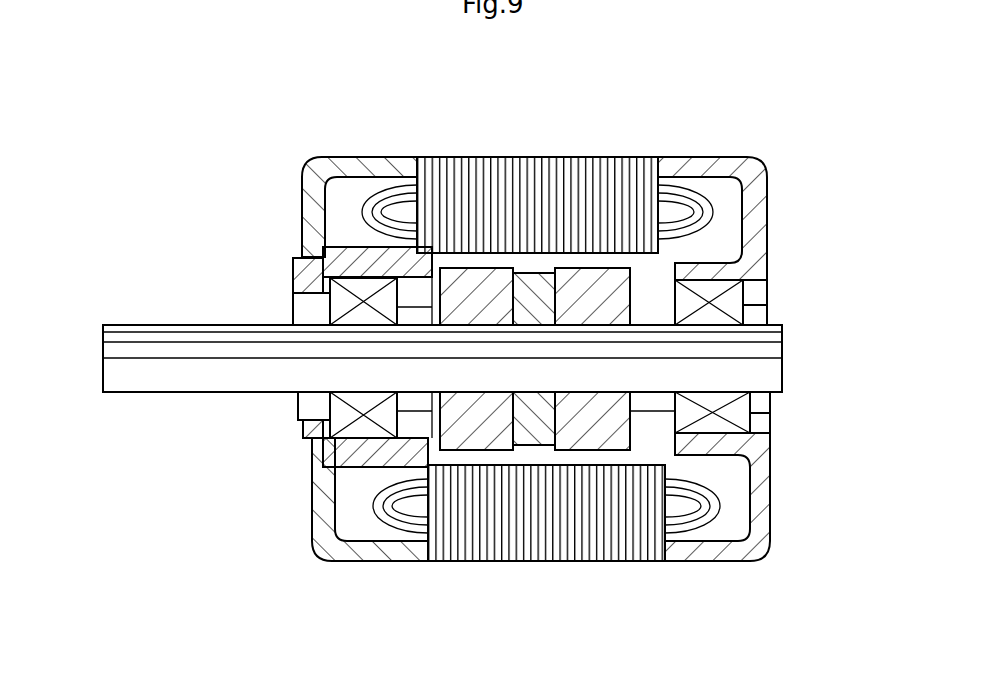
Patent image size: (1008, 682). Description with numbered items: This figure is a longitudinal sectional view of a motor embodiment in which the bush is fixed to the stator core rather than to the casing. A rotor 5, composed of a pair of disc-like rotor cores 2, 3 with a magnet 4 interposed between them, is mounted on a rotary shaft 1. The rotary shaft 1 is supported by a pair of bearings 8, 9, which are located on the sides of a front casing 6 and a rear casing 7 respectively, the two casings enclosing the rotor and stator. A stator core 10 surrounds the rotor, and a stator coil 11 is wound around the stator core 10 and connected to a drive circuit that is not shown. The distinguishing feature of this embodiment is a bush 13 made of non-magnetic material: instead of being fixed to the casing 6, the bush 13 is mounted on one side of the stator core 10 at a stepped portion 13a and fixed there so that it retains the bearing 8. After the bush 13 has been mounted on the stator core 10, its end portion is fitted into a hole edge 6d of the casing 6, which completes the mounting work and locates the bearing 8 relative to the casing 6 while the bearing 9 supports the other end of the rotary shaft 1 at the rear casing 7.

The rotary shaft 1 is at (130, 347).
The rotor core 2 is at (498, 432).
The rotor core 3 is at (613, 440).
The magnet 4 is at (538, 432).
The rotor 5 is at (595, 259).
The front casing 6 is at (313, 168).
The hole edge 6d is at (303, 445).
The rear casing 7 is at (703, 167).
The bearing 8 is at (368, 423).
The bearing 9 is at (730, 305).
The stator core 10 is at (520, 167).
The stator coil 11 is at (673, 523).
The bush 13 is at (297, 262).
The stepped portion 13a is at (413, 250).